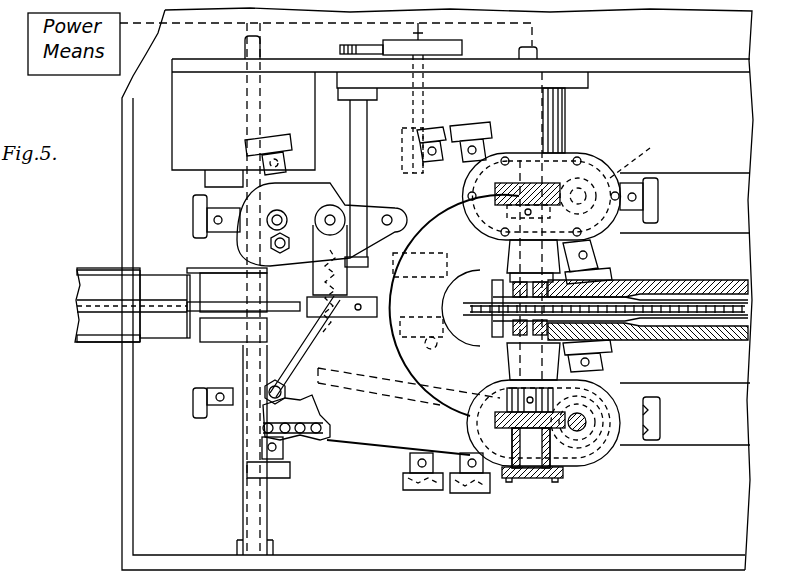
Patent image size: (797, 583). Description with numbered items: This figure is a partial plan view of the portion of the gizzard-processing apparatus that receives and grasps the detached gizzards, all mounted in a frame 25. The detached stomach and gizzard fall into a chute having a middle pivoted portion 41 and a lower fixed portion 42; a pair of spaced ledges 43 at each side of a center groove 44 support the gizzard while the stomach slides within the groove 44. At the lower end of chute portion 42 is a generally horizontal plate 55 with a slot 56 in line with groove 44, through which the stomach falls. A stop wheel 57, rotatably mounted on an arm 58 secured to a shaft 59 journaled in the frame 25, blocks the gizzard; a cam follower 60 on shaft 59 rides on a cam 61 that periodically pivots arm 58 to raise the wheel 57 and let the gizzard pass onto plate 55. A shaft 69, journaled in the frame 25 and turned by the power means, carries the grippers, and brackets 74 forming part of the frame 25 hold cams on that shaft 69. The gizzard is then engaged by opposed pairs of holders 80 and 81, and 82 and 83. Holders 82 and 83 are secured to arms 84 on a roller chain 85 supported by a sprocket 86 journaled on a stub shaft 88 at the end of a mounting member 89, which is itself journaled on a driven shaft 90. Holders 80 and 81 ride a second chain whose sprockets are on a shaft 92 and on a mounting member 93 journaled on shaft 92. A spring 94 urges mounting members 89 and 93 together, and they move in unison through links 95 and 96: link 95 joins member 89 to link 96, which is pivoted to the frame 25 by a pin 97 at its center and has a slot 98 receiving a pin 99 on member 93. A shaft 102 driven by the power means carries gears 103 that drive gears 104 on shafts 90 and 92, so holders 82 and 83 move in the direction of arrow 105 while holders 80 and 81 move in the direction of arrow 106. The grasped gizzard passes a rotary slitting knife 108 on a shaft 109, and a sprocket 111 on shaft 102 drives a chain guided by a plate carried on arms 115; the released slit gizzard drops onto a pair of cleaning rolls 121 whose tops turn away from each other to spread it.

The frame 25 is at (118, 494).
The middle pivoted portion 41 is at (90, 342).
The lower fixed portion 42 is at (170, 342).
The ledges 43 is at (85, 270).
The center groove 44 is at (80, 306).
The horizontal plate 55 is at (233, 292).
The slot 56 is at (205, 275).
The wheel 57 is at (187, 305).
The arm 58 is at (233, 330).
The shaft 59 is at (350, 117).
The cam follower 60 is at (377, 42).
The cam 61 is at (455, 50).
The shaft 69 is at (245, 52).
The brackets 74 is at (240, 523).
The holder 80 is at (658, 203).
The holder 81 is at (275, 138).
The holder 82 is at (660, 418).
The holder 83 is at (272, 470).
The arms 84 is at (225, 408).
The roller chain 85 is at (323, 423).
The sprocket 86 is at (300, 393).
The stub shaft 88 is at (270, 388).
The mounting member 89 is at (408, 431).
The driven shaft 90 is at (584, 433).
The shaft 92 is at (580, 190).
The mounting member 93 is at (317, 205).
The spring 94 is at (328, 338).
The link 95 is at (247, 368).
The link 96 is at (382, 207).
The pin 97 is at (330, 215).
The slot 98 is at (247, 242).
The pin 99 is at (284, 252).
The shaft 102 is at (538, 50).
The gears 103 is at (557, 170).
The gears 104 is at (637, 464).
The arrow 105 is at (365, 491).
The arrow 106 is at (372, 117).
The rotary slitting knife 108 is at (440, 307).
The shaft 109 is at (460, 280).
The sprocket 111 is at (472, 303).
The arms 115 is at (625, 292).
The cleaning rolls 121 is at (717, 283).